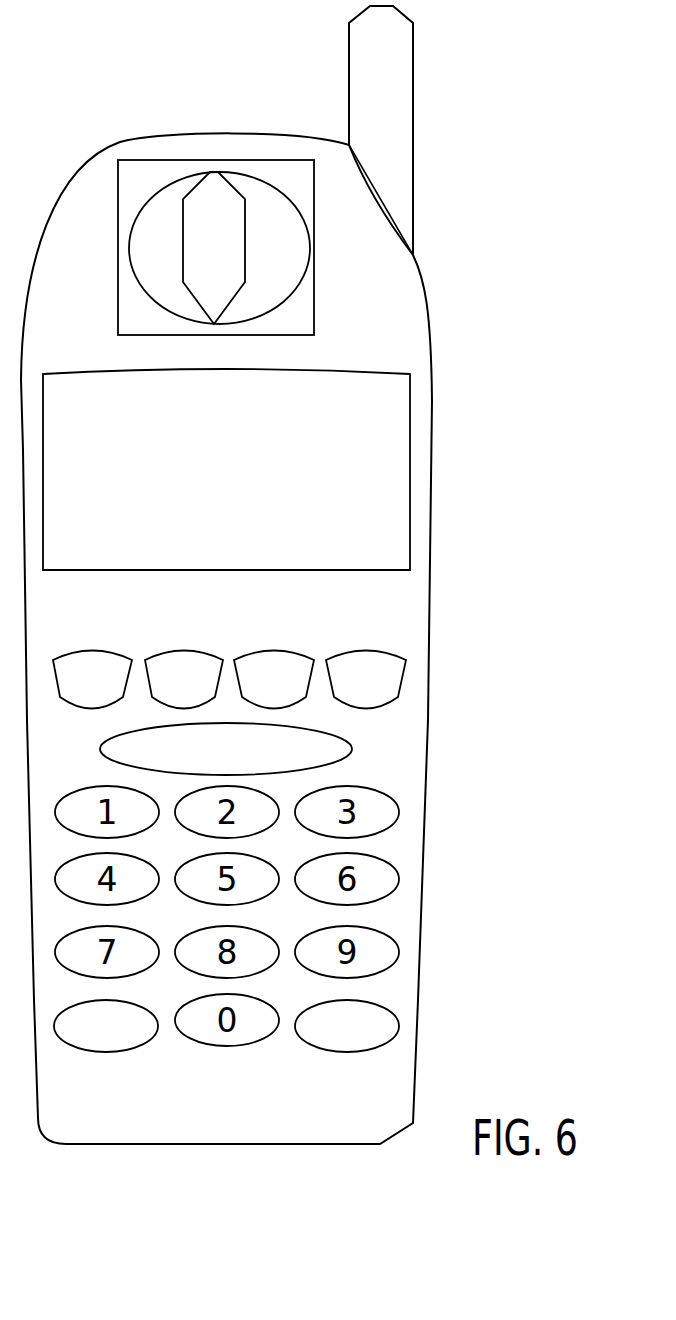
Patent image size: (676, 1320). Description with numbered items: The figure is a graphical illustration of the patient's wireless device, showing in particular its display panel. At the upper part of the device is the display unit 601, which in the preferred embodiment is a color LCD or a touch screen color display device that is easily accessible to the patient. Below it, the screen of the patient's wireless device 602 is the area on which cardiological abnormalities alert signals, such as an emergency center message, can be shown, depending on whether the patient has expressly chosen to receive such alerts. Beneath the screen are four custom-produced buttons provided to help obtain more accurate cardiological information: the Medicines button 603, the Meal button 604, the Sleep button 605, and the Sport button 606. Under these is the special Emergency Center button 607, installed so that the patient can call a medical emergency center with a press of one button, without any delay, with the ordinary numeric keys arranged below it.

The display unit 601 is at (183, 249).
The screen of patient's wireless device 602 is at (226, 469).
The Medicines button 603 is at (92, 653).
The Meal button 604 is at (184, 653).
The Sleep button 605 is at (274, 653).
The Sport button 606 is at (366, 653).
The Emergency Center button 607 is at (193, 745).